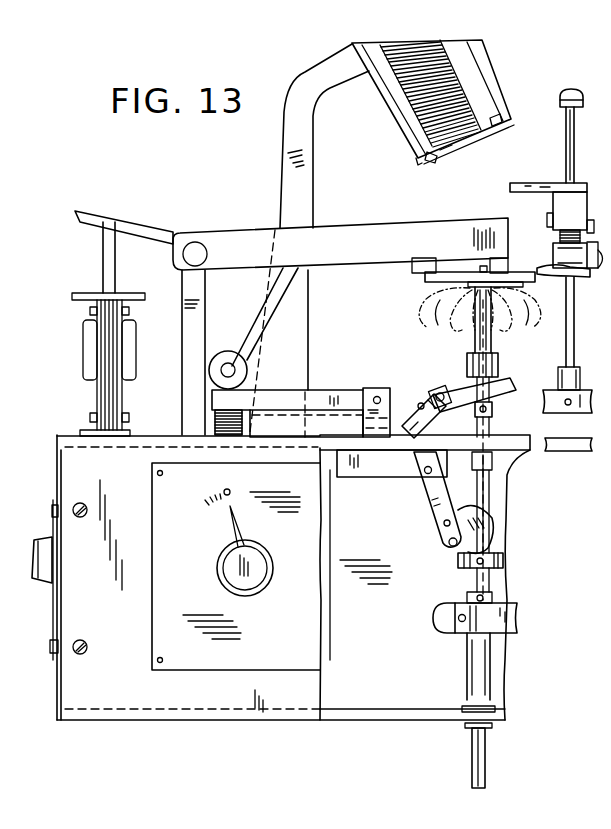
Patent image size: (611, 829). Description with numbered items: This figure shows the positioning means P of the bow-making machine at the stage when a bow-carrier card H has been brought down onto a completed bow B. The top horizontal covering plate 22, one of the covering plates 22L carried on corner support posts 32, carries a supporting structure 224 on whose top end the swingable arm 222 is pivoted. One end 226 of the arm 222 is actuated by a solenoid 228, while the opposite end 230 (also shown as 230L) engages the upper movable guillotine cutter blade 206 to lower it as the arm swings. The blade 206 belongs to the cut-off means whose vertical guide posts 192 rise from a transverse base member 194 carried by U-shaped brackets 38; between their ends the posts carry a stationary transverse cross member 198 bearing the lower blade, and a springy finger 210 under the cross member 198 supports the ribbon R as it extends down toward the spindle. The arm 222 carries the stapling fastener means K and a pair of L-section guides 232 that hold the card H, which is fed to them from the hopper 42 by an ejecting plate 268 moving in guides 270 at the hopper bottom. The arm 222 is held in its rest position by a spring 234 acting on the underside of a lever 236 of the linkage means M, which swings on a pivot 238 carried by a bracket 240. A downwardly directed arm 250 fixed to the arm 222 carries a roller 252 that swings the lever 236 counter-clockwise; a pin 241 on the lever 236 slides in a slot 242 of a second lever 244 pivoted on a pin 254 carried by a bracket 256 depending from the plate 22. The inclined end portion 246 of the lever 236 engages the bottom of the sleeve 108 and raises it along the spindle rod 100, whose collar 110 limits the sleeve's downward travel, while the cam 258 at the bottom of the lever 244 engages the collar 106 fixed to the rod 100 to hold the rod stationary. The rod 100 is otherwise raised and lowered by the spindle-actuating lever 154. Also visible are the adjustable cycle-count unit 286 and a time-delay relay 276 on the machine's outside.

The hopper 42 is at (468, 65).
The ejecting plate 268 is at (464, 136).
The guides 270 is at (417, 164).
The swingable arm 222 is at (405, 227).
The guides 232 is at (430, 274).
The bow-carrier H is at (511, 273).
The bow B is at (479, 323).
The fastener means K is at (424, 281).
The sleeve 108 is at (469, 320).
The inclined end portion 246 is at (514, 388).
The pin 241 is at (447, 390).
The slot 242 is at (434, 417).
The collar 110 is at (491, 410).
The guide posts 192 is at (568, 345).
The opposite end of swingable arm 230 is at (521, 191).
The ribbon R is at (570, 212).
The transverse cross member 198 is at (553, 252).
The movable guillotine cutter blade 206 is at (594, 273).
The springy finger 210 is at (563, 282).
The transverse base member 194 is at (560, 368).
The brackets 38 is at (568, 408).
The covering plates 22 is at (545, 450).
The downwardly directed arm 250 is at (287, 290).
The roller 252 is at (273, 334).
The linkage means M is at (318, 357).
The solenoid 228 is at (103, 402).
The end of swingable arm 226 is at (88, 217).
The supporting structure 224 is at (197, 318).
The lever 236 is at (338, 396).
The bracket 240 is at (360, 424).
The spring 234 is at (250, 406).
The pivot 238 is at (378, 397).
The time-delay relay 276 is at (56, 514).
The adjustable unit 286 is at (305, 648).
The pin 254 is at (423, 473).
The bracket 256 is at (360, 565).
The second lever 244 is at (422, 499).
The cam 258 is at (492, 525).
The collar 106 is at (462, 568).
The spindle-actuating lever 154 is at (457, 633).
The spindle member 100 is at (477, 765).
The opposite end of swingable arm 230L is at (0, 46).
The positioning means P is at (4, 105).
The support posts 32 is at (12, 153).
The covering plates 22L is at (13, 294).